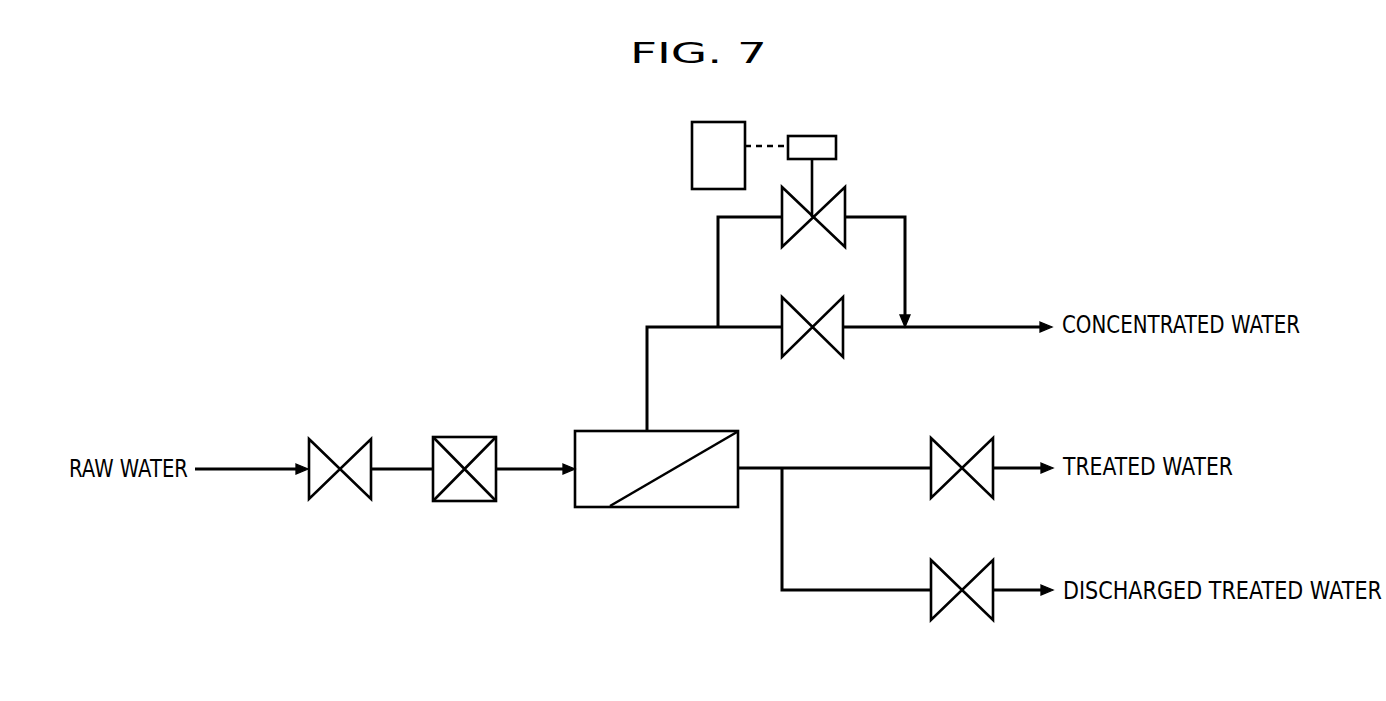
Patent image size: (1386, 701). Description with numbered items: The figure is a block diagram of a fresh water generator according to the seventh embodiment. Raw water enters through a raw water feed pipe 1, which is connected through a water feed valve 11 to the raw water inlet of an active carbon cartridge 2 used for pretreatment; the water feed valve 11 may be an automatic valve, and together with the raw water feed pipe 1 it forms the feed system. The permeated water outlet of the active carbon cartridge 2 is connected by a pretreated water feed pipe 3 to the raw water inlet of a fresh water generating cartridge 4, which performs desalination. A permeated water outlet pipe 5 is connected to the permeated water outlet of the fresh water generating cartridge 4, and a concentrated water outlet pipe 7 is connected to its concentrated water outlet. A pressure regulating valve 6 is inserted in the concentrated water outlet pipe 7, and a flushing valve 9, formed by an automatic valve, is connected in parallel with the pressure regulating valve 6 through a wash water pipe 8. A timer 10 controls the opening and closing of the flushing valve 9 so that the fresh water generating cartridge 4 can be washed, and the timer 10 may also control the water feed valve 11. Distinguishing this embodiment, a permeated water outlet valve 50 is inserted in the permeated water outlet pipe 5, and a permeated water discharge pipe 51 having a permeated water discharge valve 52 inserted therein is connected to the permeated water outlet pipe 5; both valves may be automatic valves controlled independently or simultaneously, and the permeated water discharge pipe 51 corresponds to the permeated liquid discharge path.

The raw water feed pipe 1 is at (218, 467).
The active carbon cartridge 2 is at (458, 502).
The pretreated water feed pipe 3 is at (507, 465).
The fresh water generating cartridge 4 is at (638, 508).
The permeated water outlet pipe 5 is at (857, 466).
The pressure regulating valve 6 is at (793, 331).
The concentrated water outlet pipe 7 is at (1000, 330).
The wash water pipe 8 is at (880, 216).
The flushing valve 9 is at (792, 225).
The timer 10 is at (692, 172).
The water feed valve 11 is at (327, 486).
The permeated water outlet valve 50 is at (960, 462).
The permeated water discharge pipe 51 is at (850, 593).
The permeated water discharge valve 52 is at (960, 585).